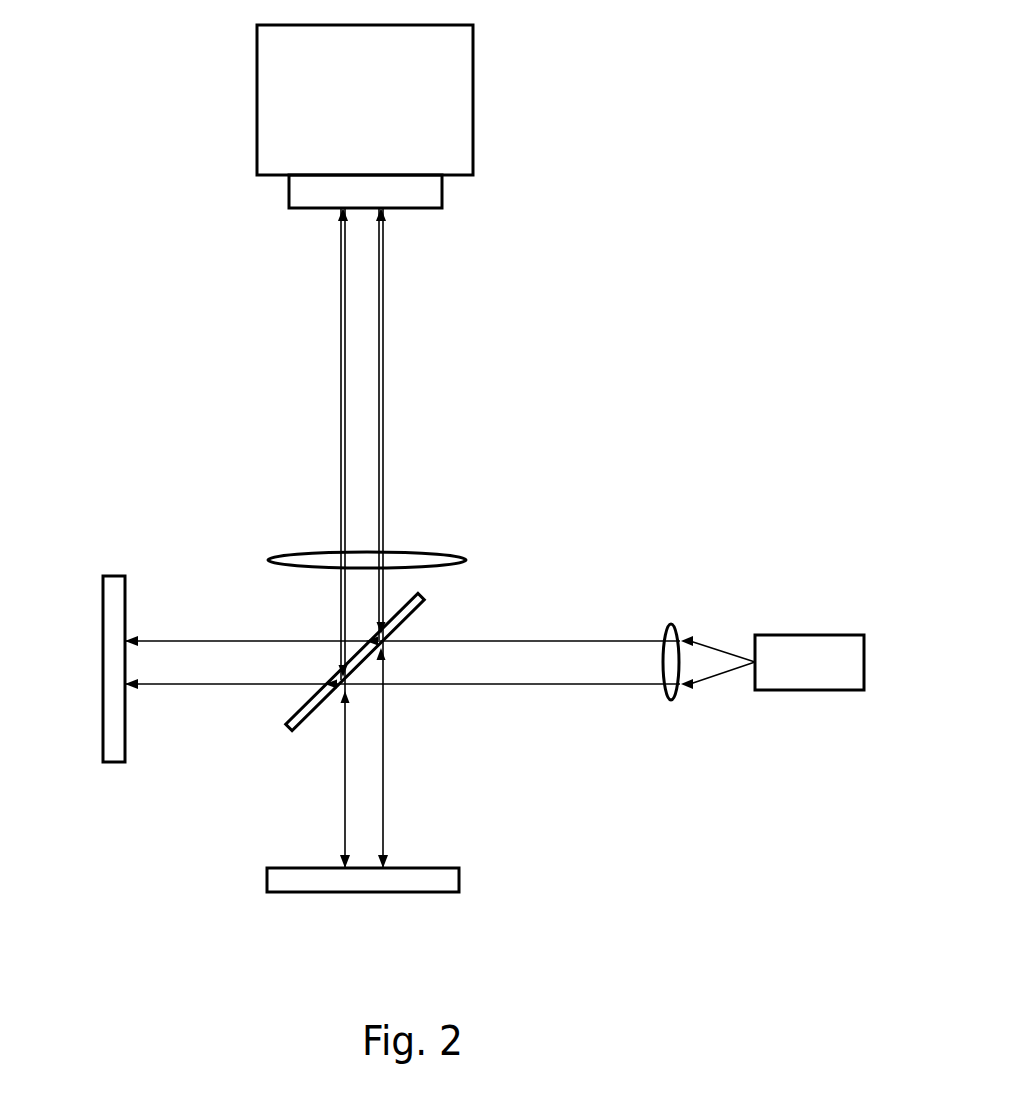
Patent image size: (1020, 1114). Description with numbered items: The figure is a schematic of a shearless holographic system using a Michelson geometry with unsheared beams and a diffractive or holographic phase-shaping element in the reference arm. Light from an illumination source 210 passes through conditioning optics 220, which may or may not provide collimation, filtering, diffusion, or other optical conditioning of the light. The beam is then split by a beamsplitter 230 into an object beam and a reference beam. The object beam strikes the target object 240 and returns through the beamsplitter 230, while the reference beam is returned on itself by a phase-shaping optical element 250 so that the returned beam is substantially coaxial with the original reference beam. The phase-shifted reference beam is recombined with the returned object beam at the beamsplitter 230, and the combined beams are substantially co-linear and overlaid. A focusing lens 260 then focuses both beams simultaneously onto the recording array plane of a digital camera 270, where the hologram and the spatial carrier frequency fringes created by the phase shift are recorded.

The illumination source 210 is at (833, 635).
The conditioning optics 220 is at (668, 698).
The beamsplitter 230 is at (297, 728).
The target object 240 is at (408, 892).
The phase-shaping optical element 250 is at (103, 650).
The focusing lens 260 is at (423, 551).
The digital camera 270 is at (473, 117).